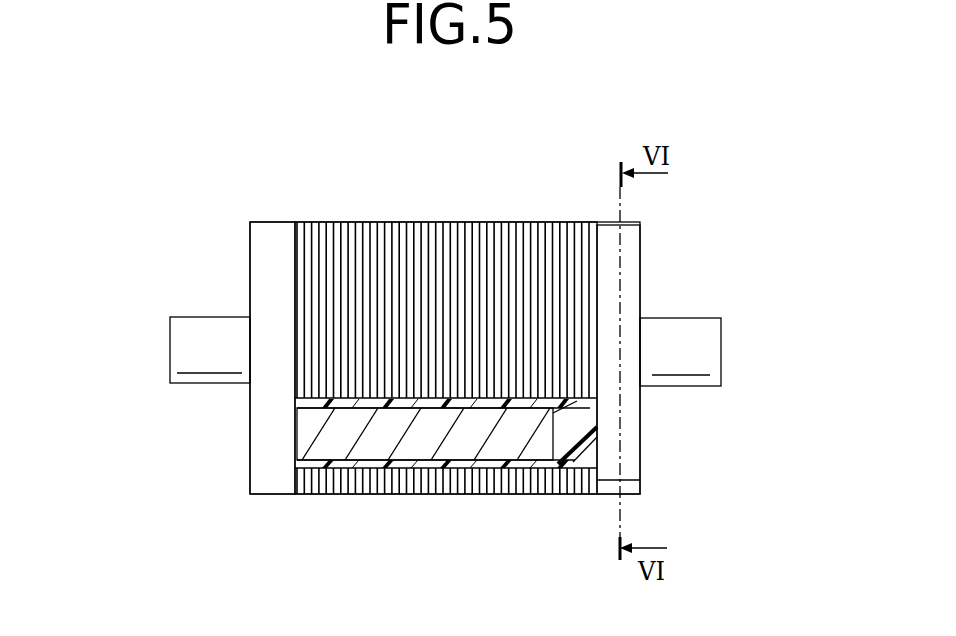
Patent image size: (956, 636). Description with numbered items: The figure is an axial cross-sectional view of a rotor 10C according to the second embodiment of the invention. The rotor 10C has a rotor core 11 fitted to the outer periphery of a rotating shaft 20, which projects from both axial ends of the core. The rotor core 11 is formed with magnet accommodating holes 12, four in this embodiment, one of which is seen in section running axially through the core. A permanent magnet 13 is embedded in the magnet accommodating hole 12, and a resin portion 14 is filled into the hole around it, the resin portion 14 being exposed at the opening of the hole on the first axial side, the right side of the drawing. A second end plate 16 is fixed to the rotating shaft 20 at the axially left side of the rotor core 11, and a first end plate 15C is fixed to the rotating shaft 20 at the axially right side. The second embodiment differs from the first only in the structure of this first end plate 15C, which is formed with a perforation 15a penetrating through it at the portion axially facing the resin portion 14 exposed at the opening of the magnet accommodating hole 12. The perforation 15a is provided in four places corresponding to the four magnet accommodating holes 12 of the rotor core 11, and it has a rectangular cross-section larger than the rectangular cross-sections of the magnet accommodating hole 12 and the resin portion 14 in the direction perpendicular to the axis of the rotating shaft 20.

The rotor 10C is at (506, 190).
The rotor core 11 is at (403, 238).
The magnet accommodating hole 12 is at (356, 452).
The magnet 13 is at (440, 443).
The resin portion 14 is at (572, 442).
The first end plate 15C is at (627, 272).
The perforation 15a is at (627, 390).
The second end plate 16 is at (277, 228).
The rotating shaft 20 is at (186, 311).